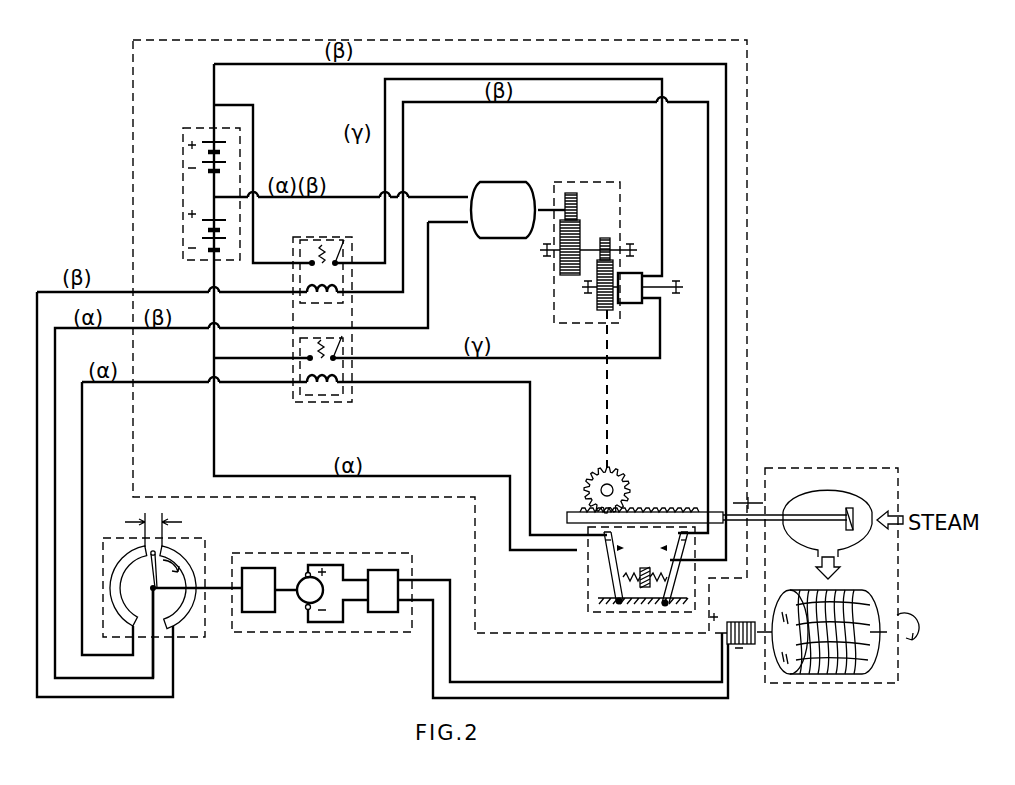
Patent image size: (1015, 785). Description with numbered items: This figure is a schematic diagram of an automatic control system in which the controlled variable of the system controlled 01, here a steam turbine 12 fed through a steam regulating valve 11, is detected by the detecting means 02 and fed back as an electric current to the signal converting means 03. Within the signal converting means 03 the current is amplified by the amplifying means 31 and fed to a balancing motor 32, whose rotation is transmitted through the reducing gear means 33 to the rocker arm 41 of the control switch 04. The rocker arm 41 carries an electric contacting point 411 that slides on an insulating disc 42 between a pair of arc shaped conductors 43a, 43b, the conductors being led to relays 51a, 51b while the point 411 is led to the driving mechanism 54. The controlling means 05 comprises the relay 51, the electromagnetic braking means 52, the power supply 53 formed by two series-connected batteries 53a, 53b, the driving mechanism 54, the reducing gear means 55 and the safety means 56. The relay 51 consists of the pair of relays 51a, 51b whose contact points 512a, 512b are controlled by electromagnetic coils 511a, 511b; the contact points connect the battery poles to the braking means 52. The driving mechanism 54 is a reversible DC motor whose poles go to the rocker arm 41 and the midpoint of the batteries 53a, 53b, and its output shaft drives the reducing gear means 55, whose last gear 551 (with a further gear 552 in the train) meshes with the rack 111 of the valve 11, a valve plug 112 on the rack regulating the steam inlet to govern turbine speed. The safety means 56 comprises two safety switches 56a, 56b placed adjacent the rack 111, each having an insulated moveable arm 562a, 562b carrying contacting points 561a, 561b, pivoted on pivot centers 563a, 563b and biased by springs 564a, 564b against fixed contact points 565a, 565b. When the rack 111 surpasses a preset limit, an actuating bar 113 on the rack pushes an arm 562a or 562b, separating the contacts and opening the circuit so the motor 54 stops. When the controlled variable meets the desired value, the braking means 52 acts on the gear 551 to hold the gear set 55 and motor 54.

The controlling means 05 is at (407, 40).
The power supply 53 is at (186, 178).
The power supply 53a is at (186, 241).
The power supply 53b is at (186, 158).
The relay 51 is at (335, 325).
The relay 51a is at (341, 379).
The relay 51b is at (339, 253).
The electromagnetic coil 511a is at (336, 397).
The electromagnetic coil 511b is at (344, 287).
The contact point 512a is at (338, 341).
The contact point 512b is at (337, 241).
The driving mechanism 54 is at (503, 182).
The reducing gear means 55 is at (611, 328).
The last gear 551 is at (590, 311).
The gear 552 is at (570, 190).
The electromagnetic braking means 52 is at (630, 303).
The rack 111 is at (582, 508).
The actuating bar 113 is at (658, 508).
The valve plug 112 is at (848, 506).
The steam regulating valve 11 is at (808, 506).
The steam turbine 12 is at (855, 562).
The system controlled 01 is at (838, 559).
The detecting means 02 is at (744, 655).
The safety means 56 is at (633, 603).
The safety switch 56a is at (622, 553).
The safety switch 56b is at (709, 605).
The contacting point 561a is at (609, 547).
The contacting point 561b is at (682, 541).
The moveable arm 562a is at (623, 574).
The moveable arm 562b is at (665, 569).
The pivot center 563a is at (614, 603).
The pivot center 563b is at (666, 604).
The spring 564a is at (604, 600).
The spring 564b is at (648, 612).
The fixed contact point 565a is at (603, 536).
The fixed contact point 565b is at (677, 548).
The control switch 04 is at (166, 596).
The rocker arm 41 is at (167, 597).
The electric contacting point 411 is at (146, 550).
The arc shaped conductor 43a is at (130, 618).
The arc shaped conductor 43b is at (178, 622).
The insulating disc 42 is at (157, 632).
The signal converting means 03 is at (322, 574).
The amplifying means 31 is at (384, 570).
The balancing motor 32 is at (305, 572).
The reducing gear means 33 is at (258, 568).